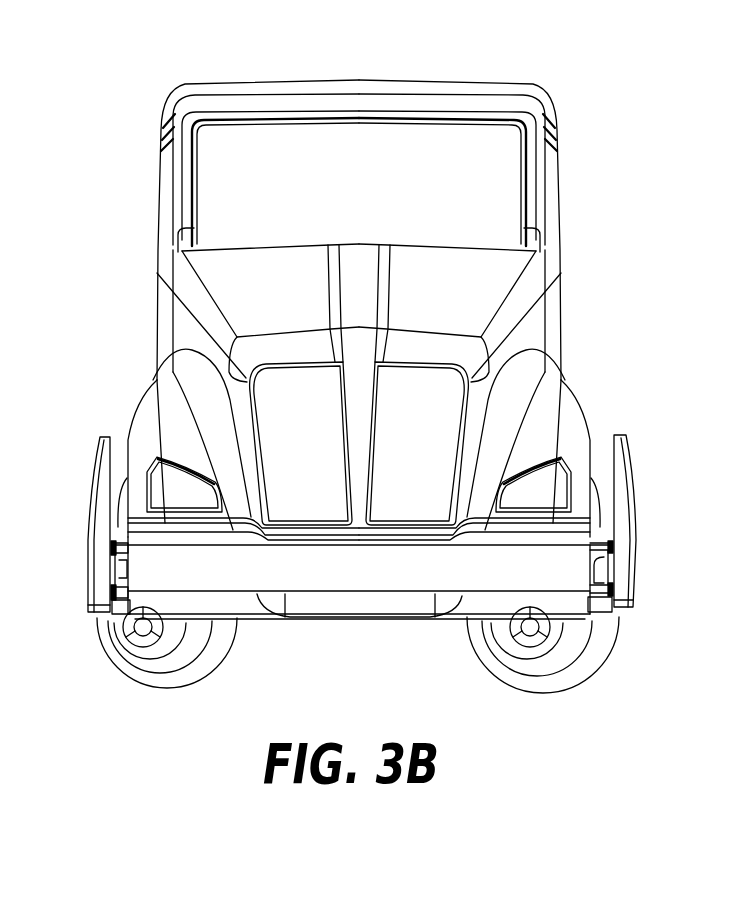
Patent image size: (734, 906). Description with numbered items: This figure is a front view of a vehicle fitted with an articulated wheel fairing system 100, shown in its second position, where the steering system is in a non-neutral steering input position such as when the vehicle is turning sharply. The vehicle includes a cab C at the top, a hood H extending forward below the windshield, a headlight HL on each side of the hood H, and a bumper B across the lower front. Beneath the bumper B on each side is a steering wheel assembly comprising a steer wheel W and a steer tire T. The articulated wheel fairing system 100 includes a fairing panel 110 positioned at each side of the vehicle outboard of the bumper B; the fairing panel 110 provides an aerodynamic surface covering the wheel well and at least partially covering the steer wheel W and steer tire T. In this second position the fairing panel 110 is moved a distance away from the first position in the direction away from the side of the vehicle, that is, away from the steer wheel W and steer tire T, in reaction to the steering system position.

The cab C is at (463, 80).
The hood H is at (481, 297).
The headlight HL is at (547, 455).
The articulated wheel fairing system 100 is at (368, 521).
The fairing panel 110 is at (86, 468).
The bumper B is at (143, 574).
The steer tire T is at (100, 624).
The steer wheel W is at (142, 636).